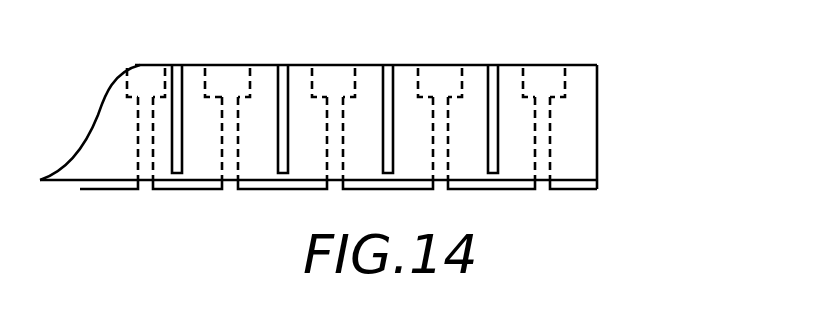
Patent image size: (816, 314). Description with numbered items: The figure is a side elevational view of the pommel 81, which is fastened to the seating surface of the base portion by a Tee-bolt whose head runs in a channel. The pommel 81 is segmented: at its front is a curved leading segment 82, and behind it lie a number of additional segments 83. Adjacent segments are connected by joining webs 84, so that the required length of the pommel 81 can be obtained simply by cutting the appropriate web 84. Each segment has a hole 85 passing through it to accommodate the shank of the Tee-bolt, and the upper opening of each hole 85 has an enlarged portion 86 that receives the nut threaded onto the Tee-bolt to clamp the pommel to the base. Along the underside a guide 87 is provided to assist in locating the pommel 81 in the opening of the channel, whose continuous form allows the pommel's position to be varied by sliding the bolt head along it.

The pommel 81 is at (618, 119).
The curved leading segment 82 is at (98, 124).
The additional segments 83 is at (266, 72).
The joining web 84 is at (192, 65).
The hole 85 is at (147, 170).
The enlarged portion 86 is at (150, 63).
The guide 87 is at (107, 190).